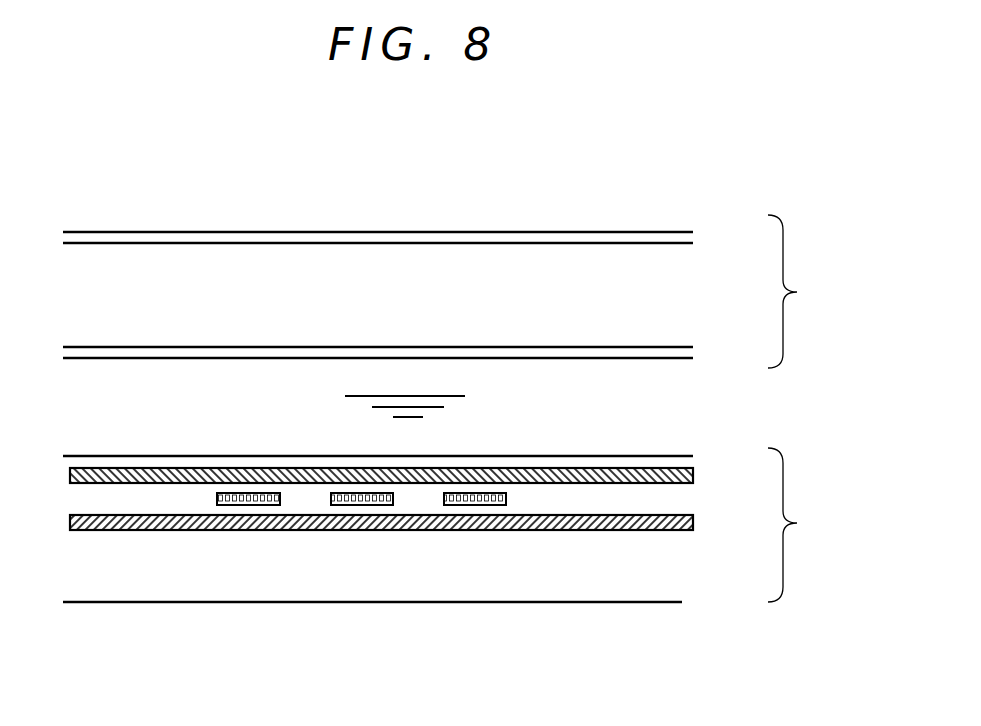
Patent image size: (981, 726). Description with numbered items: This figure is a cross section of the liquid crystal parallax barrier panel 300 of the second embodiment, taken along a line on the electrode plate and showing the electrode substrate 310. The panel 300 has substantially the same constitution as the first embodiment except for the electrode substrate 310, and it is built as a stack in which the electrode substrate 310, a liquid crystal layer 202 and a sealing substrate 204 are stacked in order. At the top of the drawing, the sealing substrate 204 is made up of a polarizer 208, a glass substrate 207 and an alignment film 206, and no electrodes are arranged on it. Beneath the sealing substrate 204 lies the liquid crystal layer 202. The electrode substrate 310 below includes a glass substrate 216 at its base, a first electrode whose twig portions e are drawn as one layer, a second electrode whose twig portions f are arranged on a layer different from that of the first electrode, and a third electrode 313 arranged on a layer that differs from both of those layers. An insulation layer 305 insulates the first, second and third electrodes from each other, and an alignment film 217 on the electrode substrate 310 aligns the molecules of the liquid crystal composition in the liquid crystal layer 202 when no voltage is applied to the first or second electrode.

The liquid crystal parallax barrier panel 300 is at (388, 196).
The sealing substrate 204 is at (809, 291).
The polarizer 208 is at (673, 239).
The glass substrate 207 is at (665, 297).
The alignment film 206 is at (673, 355).
The liquid crystal layer 202 is at (668, 413).
The electrode substrate 310 is at (809, 525).
The alignment film 217 is at (676, 462).
The insulation layer 305 is at (678, 498).
The third electrode 313 is at (117, 530).
The glass substrate 216 is at (673, 571).
The twig portions of first electrode e is at (178, 483).
The twig portions of second electrode f is at (235, 505).